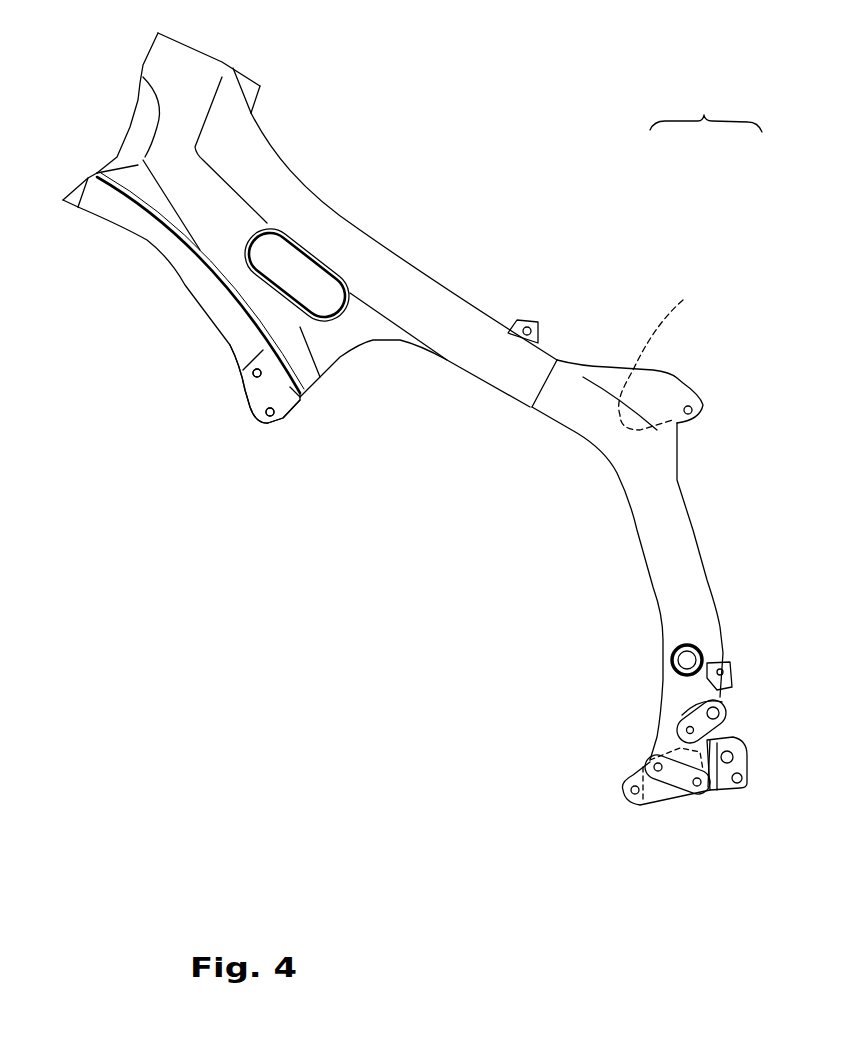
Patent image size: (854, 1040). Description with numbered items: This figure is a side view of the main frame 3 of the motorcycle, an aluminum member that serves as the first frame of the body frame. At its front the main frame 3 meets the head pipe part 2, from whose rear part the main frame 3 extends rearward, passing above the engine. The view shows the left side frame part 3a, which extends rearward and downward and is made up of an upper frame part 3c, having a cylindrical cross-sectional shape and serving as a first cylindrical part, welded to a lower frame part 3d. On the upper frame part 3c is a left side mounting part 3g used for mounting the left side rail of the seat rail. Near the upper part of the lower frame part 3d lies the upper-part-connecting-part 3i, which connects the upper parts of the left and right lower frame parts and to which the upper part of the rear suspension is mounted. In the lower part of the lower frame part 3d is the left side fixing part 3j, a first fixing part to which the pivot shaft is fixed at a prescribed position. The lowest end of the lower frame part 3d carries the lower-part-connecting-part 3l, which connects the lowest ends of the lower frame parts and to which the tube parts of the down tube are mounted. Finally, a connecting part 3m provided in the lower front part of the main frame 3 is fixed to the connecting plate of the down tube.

The head pipe part 2 is at (158, 65).
The main frame 3 is at (273, 187).
The left side frame part 3a is at (706, 109).
The upper frame part 3c is at (443, 307).
The lower frame part 3d is at (680, 533).
The left side mounting part 3g is at (537, 323).
The upper-part-connecting-part 3i is at (664, 347).
The left side fixing part 3j is at (697, 633).
The lower-part-connecting-part 3l is at (623, 778).
The connecting part 3m is at (293, 395).